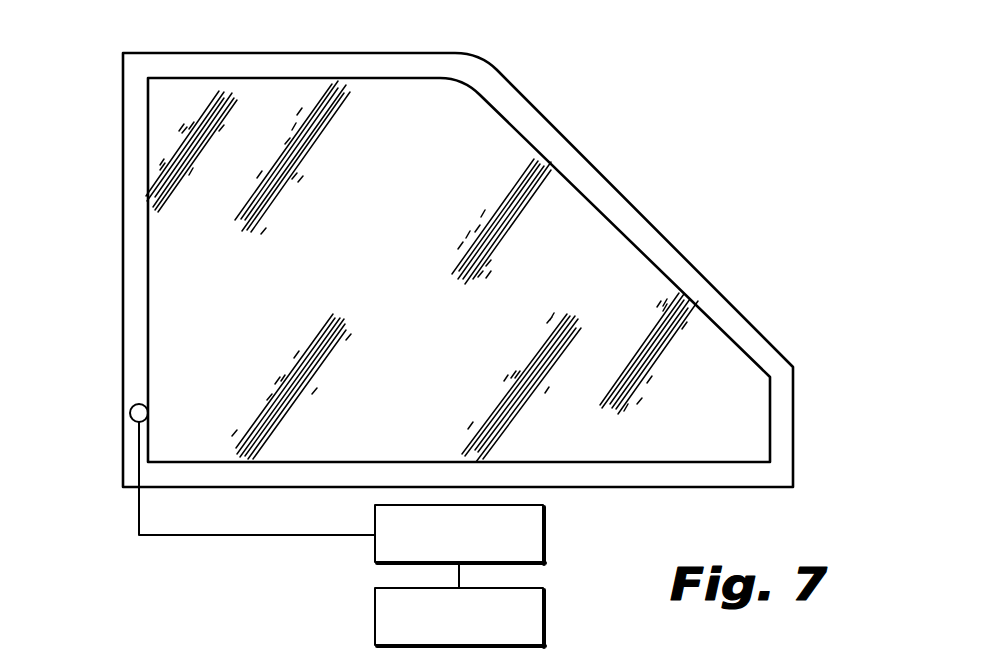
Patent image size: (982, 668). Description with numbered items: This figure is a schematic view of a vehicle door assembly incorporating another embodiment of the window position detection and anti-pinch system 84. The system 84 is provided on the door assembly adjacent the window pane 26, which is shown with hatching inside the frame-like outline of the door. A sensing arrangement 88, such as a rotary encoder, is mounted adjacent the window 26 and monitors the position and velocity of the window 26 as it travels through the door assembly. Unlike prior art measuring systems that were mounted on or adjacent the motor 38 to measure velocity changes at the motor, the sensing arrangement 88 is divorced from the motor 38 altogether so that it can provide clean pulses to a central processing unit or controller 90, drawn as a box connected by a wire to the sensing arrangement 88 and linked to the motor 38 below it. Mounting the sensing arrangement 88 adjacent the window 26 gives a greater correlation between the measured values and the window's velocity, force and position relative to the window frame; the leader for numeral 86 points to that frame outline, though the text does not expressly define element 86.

The window position detection and anti-pinch system 84 is at (627, 106).
The window pane 26 is at (621, 273).
The window frame 86 is at (147, 203).
The sensing arrangement 88 is at (130, 413).
The controller 90 is at (545, 531).
The motor 38 is at (545, 612).